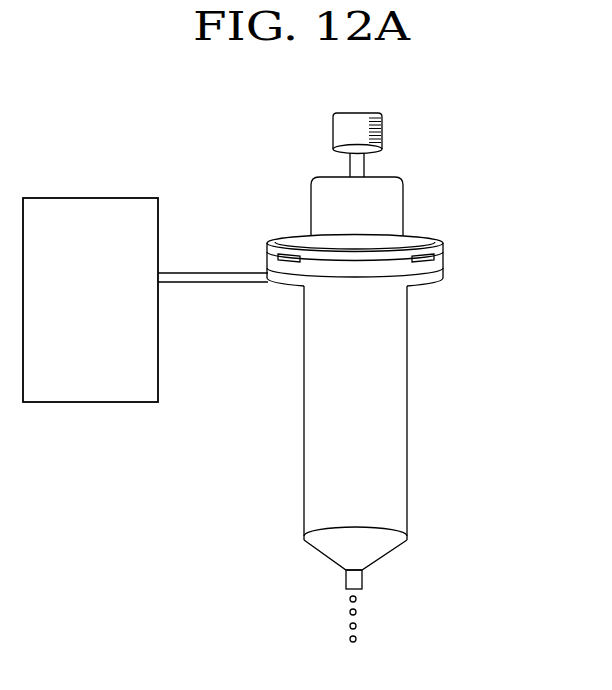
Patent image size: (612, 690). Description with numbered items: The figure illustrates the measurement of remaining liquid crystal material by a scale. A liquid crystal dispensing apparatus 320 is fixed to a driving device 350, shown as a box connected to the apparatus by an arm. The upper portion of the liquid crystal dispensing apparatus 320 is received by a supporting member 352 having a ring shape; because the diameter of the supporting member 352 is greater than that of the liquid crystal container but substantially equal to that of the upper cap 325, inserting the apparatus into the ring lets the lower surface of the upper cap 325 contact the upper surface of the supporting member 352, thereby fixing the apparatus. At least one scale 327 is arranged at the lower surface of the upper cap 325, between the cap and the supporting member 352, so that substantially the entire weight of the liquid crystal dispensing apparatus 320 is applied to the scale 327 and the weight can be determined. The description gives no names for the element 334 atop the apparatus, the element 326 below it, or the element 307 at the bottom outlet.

The liquid crystal dispensing apparatus 320 is at (294, 175).
The adjusting knob 334 is at (382, 121).
The housing 326 is at (403, 192).
The upper cap 325 is at (445, 247).
The scale 327 is at (440, 262).
The supporting member 352 is at (440, 290).
The driving device 350 is at (88, 402).
The droplets 307 is at (358, 612).